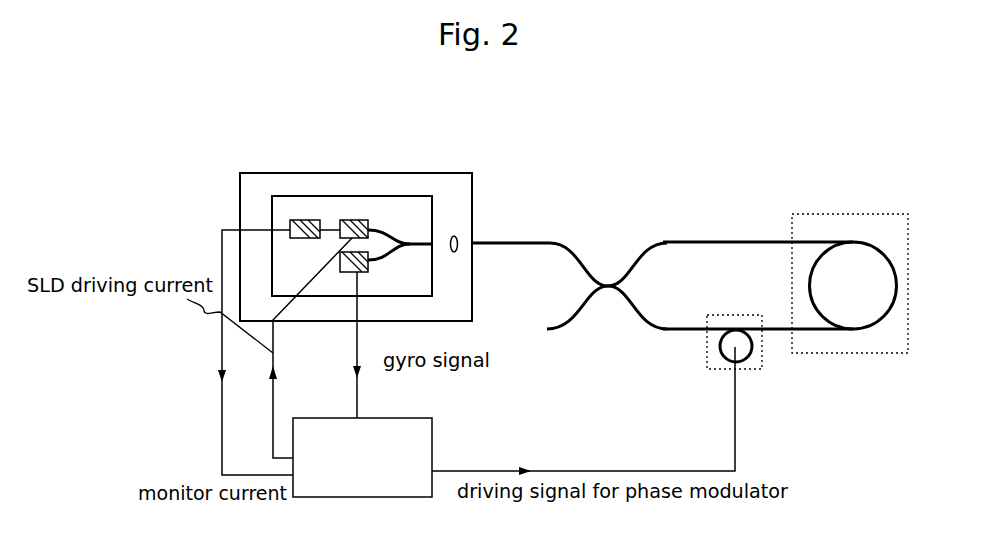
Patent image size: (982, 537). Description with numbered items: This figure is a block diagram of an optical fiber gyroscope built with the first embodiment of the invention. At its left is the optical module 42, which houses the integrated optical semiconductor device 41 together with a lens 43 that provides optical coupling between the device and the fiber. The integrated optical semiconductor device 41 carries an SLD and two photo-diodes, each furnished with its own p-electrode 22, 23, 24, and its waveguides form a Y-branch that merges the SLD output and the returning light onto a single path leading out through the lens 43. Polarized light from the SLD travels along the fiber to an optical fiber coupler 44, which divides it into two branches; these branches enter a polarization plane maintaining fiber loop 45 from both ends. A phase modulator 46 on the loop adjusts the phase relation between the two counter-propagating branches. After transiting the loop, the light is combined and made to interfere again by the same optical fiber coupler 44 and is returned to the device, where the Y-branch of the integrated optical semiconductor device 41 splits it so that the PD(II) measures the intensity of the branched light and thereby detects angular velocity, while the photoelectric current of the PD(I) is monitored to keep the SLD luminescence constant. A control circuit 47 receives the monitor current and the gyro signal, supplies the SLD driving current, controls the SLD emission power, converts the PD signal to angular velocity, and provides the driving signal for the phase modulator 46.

The p-electrode 22 is at (358, 220).
The p-electrode 23 is at (308, 220).
The p-electrode 24 is at (367, 272).
The integrated optical semiconductor device 41 is at (428, 196).
The optical module 42 is at (307, 171).
The lens 43 is at (457, 238).
The optical fiber coupler 44 is at (582, 263).
The polarization plane maintaining fiber loop 45 is at (852, 230).
The phase modulator 46 is at (752, 360).
The control circuit 47 is at (422, 455).